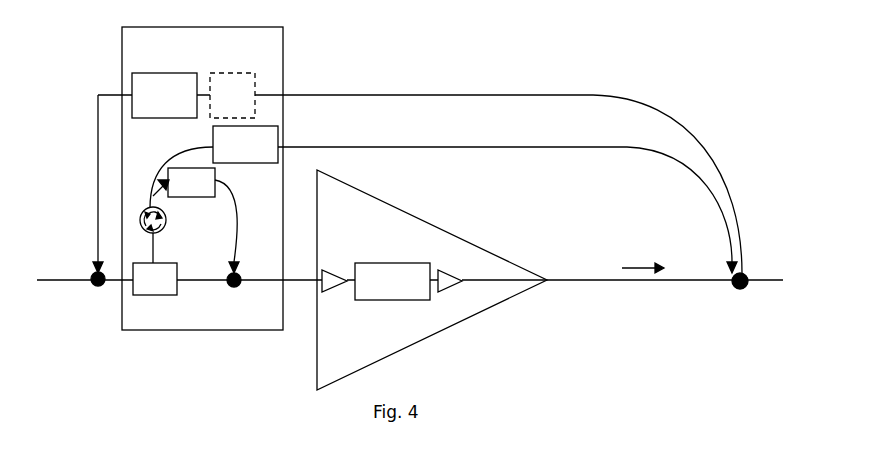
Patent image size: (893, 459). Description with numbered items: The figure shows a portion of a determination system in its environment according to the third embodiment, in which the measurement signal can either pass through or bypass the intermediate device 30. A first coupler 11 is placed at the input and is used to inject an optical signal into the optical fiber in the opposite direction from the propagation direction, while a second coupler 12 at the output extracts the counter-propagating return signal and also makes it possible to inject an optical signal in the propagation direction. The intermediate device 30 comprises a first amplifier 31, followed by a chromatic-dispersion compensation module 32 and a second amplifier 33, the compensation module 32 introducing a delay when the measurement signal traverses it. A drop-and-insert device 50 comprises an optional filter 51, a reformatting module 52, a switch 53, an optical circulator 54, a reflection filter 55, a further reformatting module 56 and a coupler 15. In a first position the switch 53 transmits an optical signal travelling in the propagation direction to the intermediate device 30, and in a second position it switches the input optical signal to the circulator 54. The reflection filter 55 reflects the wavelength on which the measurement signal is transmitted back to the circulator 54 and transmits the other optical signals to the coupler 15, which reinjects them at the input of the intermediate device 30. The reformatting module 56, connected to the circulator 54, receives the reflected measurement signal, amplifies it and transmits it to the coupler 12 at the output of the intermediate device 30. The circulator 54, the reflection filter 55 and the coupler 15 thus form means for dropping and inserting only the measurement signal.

The first coupler 11 is at (92, 276).
The second coupler 12 is at (743, 290).
The coupler 15 is at (238, 286).
The intermediate device 30 is at (420, 343).
The first amplifier 31 is at (324, 288).
The chromatic-dispersion compensation module 32 is at (377, 300).
The second amplifier 33 is at (440, 288).
The drop-and-insert device 50 is at (170, 330).
The filter 51 is at (245, 72).
The reformatting module 52 is at (192, 72).
The switch 53 is at (155, 295).
The optical circulator 54 is at (162, 228).
The reflection filter 55 is at (215, 180).
The reformatting module 56 is at (213, 145).